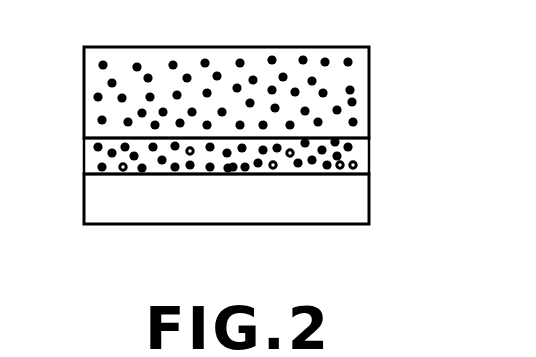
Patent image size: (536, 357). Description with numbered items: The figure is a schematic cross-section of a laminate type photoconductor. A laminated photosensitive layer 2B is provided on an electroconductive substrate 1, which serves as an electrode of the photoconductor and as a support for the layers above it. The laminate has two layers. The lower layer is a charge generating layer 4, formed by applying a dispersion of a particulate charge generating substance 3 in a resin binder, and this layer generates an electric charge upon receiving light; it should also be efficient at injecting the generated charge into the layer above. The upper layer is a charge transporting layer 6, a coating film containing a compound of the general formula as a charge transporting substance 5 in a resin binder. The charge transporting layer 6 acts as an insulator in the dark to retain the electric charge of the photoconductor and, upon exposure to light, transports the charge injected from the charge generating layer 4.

The electroconductive substrate 1 is at (352, 203).
The laminated photosensitive layer 2B is at (448, 70).
The charge generating substance 3 is at (232, 161).
The charge generating layer 4 is at (355, 155).
The charge transporting substance 5 is at (230, 92).
The charge transporting layer 6 is at (352, 102).